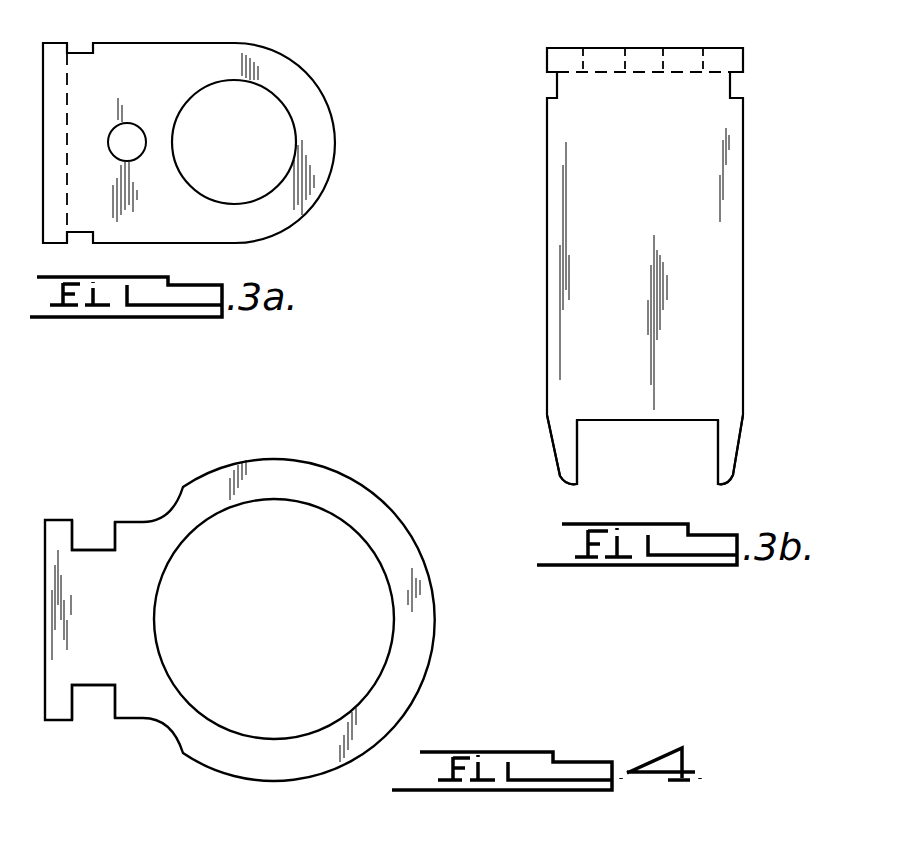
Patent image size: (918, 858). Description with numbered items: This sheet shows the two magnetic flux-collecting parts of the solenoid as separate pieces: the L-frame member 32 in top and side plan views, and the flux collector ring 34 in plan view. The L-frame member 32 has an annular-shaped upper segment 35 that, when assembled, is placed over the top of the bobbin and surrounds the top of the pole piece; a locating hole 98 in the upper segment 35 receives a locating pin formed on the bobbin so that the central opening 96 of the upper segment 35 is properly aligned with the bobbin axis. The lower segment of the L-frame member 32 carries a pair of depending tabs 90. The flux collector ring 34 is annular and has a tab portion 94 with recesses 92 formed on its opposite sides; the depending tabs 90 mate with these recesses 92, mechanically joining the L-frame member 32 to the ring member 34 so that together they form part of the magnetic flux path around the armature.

In FIG. 3A, the L-frame member 32 is at (322, 190).
In FIG. 3B, the L-frame member 32 is at (748, 202).
In FIG. 4, the flux collector ring 34 is at (323, 461).
In FIG. 3A, the upper segment 35 is at (275, 78).
In FIG. 3B, the depending tabs 90 is at (558, 441).
In FIG. 4, the recesses 92 is at (98, 545).
In FIG. 4, the tab portion 94 is at (102, 617).
In FIG. 3A, the aperture of bracket 96 is at (290, 136).
In FIG. 3A, the locating hole 98 is at (127, 126).